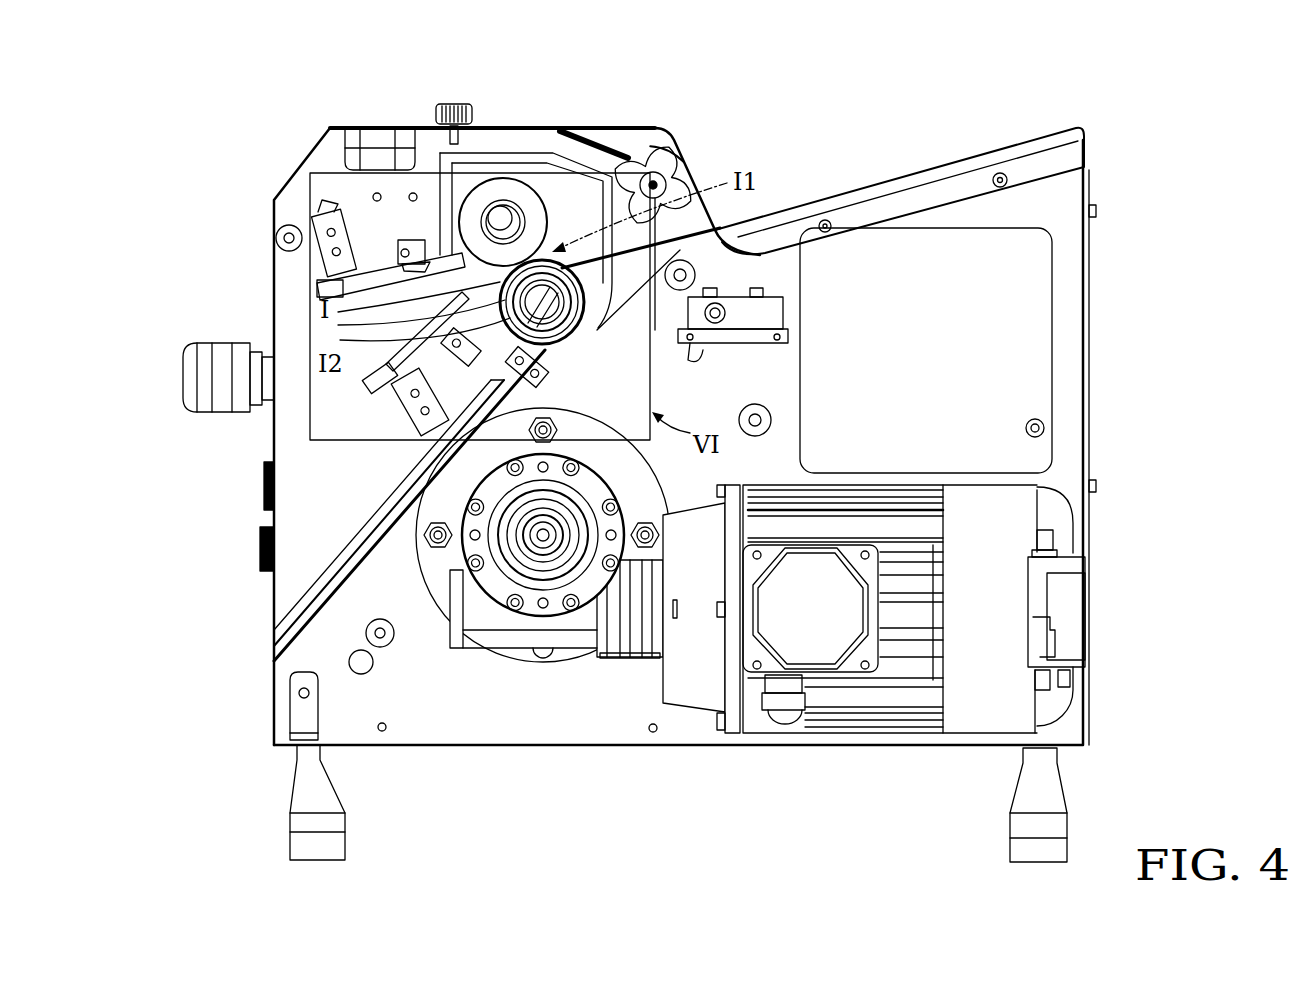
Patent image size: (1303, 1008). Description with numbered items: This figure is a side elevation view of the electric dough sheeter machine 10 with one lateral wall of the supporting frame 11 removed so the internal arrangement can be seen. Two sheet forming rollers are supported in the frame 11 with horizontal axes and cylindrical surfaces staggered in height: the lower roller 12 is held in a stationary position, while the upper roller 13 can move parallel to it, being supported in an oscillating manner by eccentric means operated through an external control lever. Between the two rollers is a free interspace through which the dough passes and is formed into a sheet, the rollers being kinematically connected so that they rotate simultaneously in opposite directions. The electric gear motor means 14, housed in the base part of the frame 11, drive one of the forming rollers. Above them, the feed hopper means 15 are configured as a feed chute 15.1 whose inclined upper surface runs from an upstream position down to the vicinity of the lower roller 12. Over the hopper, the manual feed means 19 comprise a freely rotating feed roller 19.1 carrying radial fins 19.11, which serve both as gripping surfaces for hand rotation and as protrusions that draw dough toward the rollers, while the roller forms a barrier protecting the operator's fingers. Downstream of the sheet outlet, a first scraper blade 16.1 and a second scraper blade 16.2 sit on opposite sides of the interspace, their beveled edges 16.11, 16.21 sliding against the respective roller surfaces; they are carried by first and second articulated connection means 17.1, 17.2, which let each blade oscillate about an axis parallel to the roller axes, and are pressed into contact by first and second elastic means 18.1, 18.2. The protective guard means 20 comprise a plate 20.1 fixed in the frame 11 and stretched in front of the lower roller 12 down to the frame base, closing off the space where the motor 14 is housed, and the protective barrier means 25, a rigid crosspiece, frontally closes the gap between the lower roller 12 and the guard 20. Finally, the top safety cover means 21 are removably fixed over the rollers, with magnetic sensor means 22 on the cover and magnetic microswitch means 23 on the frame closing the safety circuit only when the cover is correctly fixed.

The electric dough sheeter machine 10 is at (222, 190).
The supporting frame 11 is at (1125, 345).
The lower roller 12 is at (573, 330).
The upper roller 13 is at (518, 190).
The electric gear motor means 14 is at (612, 672).
The feed hopper means 15 is at (944, 162).
The feed chute 15.1 is at (963, 158).
The first scraper blade 16.1 is at (373, 368).
The beveled edge 16.11 is at (310, 427).
The second scraper blade 16.2 is at (333, 283).
The beveled edge 16.21 is at (458, 252).
The first articulated connection means 17.1 is at (466, 368).
The second articulated connection means 17.2 is at (312, 205).
The first elastic means 18.1 is at (417, 423).
The second elastic means 18.2 is at (318, 208).
The manual feed means 19 is at (726, 141).
The feed roller 19.1 is at (647, 170).
The radial fins 19.11 is at (663, 158).
The protective guard means 20 is at (284, 606).
The plate 20.1 is at (657, 347).
The top safety cover means 21 is at (502, 127).
The magnetic sensor means 22 is at (377, 135).
The magnetic microswitch means 23 is at (393, 238).
The protective barrier means 25 is at (522, 370).